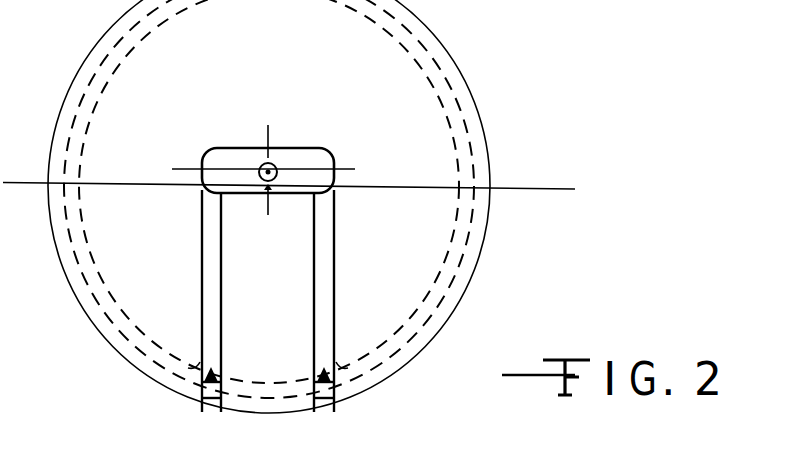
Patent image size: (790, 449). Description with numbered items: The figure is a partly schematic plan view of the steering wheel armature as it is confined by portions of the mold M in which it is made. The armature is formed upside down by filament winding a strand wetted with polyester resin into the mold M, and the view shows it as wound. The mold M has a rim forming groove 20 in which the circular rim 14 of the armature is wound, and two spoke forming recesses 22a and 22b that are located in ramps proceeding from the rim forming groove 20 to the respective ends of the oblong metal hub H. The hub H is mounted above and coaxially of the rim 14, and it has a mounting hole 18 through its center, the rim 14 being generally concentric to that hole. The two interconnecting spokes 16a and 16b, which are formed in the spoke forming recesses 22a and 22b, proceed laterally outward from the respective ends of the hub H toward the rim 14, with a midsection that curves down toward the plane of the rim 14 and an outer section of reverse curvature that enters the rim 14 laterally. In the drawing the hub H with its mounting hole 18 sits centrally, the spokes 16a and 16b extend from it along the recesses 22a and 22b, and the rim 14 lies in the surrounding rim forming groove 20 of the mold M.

The circular rim 14 is at (467, 240).
The rim forming groove 20 is at (111, 275).
The mounting hole 18 is at (276, 162).
The hub H is at (308, 148).
The mold M is at (277, 85).
The spoke forming recess 22a is at (200, 264).
The spoke forming recess 22b is at (336, 250).
The spoke 16a is at (212, 320).
The spoke 16b is at (324, 320).